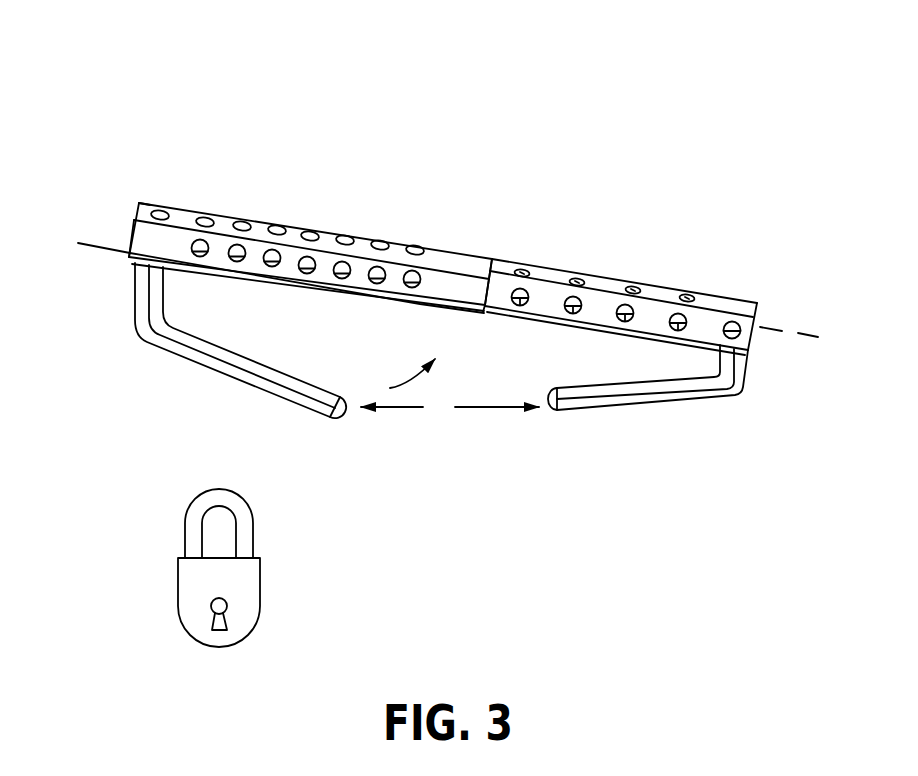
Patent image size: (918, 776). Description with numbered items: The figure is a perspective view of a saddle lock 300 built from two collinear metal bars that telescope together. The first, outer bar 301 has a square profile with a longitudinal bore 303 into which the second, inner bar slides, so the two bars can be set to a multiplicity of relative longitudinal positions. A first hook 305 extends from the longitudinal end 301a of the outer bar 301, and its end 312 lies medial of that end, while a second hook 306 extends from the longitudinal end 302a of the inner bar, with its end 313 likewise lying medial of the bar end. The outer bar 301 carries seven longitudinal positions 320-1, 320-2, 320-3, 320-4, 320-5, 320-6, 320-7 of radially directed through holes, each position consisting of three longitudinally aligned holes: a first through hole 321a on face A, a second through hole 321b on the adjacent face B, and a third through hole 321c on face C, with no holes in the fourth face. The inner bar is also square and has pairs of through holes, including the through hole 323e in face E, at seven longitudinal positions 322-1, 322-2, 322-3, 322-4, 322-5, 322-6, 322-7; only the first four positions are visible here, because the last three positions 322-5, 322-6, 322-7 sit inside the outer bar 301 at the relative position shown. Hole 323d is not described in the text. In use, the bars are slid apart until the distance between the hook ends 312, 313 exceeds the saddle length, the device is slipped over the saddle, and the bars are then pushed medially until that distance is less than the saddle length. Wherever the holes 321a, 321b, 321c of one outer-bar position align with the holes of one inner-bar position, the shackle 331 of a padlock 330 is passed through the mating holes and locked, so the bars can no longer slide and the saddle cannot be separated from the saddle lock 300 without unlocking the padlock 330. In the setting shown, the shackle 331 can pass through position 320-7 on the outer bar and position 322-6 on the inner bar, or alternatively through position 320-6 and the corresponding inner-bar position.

The saddle lock 300 is at (630, 68).
The first, outer bar 301 is at (486, 258).
The longitudinal end of the first bar 301a is at (138, 203).
The longitudinal end of the second bar 302a is at (769, 297).
The longitudinal bore 303 is at (120, 227).
The first hook 305 is at (167, 331).
The second hook 306 is at (728, 361).
The end of the first hook 312 is at (349, 419).
The end of the second hook 313 is at (562, 409).
The longitudinal position on the outer bar 320-1 is at (204, 213).
The longitudinal position on the outer bar 320-2 is at (244, 217).
The longitudinal position on the outer bar 320-3 is at (279, 223).
The longitudinal position on the outer bar 320-4 is at (314, 227).
The longitudinal position on the outer bar 320-5 is at (348, 233).
The longitudinal position on the outer bar 320-6 is at (382, 238).
The longitudinal position on the outer bar 320-7 is at (416, 243).
The first through hole 321a is at (263, 176).
The second through hole 321b is at (193, 248).
The third through hole 321c is at (408, 309).
The longitudinal position on the inner bar 322-1 is at (683, 337).
The longitudinal position on the inner bar 322-2 is at (622, 323).
The longitudinal position on the inner bar 322-3 is at (577, 315).
The longitudinal position on the inner bar 322-4 is at (512, 307).
The longitudinal position on the inner bar 322-5 is at (469, 305).
The longitudinal position on the inner bar 322-6 is at (411, 291).
The longitudinal position on the inner bar 322-7 is at (376, 288).
The top aperture of second bar 323d is at (687, 296).
The through hole in face E of the inner bar 323e is at (521, 311).
The padlock 330 is at (174, 619).
The shackle 331 is at (256, 523).